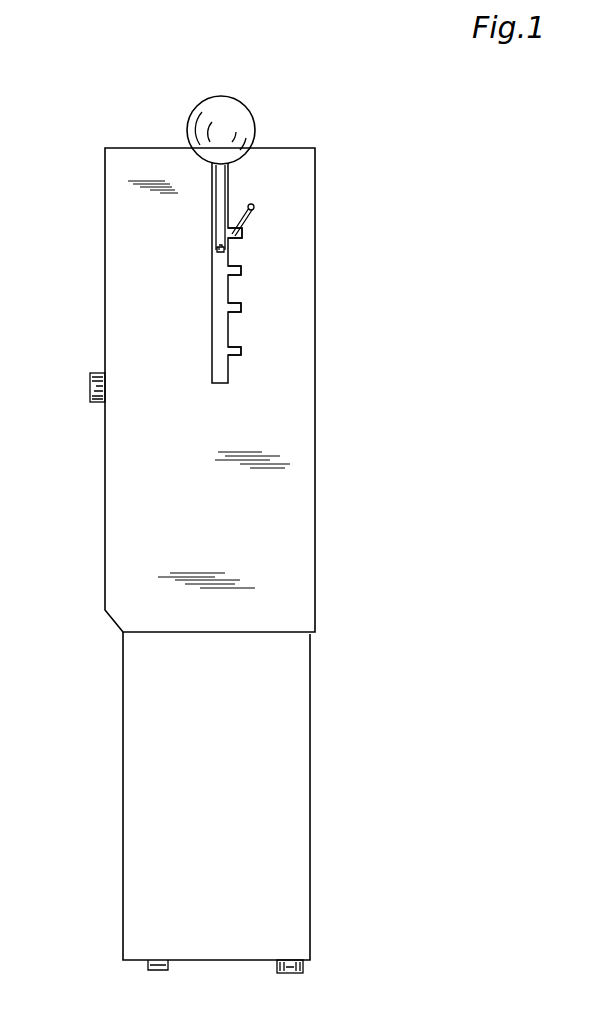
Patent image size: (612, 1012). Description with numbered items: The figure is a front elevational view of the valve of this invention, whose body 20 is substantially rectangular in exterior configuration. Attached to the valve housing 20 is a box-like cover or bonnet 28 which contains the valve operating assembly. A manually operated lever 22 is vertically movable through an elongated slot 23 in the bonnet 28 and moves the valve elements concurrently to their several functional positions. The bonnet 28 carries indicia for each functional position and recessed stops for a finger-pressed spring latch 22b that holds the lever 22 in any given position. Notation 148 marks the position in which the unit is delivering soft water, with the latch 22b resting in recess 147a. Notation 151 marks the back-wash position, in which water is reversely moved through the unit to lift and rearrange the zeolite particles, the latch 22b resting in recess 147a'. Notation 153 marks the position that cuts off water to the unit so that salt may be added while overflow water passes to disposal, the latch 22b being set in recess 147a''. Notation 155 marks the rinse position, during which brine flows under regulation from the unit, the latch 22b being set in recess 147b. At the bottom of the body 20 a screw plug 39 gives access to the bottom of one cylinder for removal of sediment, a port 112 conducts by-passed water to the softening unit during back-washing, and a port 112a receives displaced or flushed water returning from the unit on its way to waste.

The valve body 20 is at (324, 689).
The bonnet 28 is at (122, 468).
The manually operated lever 22 is at (218, 195).
The spring latch 22b is at (243, 208).
The elongated slot 23 is at (218, 287).
The recess 147a is at (298, 202).
The recess 147a' is at (199, 268).
The recess 147a'' is at (197, 310).
The recess 147b is at (236, 352).
The soft water indicia 148 is at (302, 233).
The back-wash indicia 151 is at (306, 267).
The add salt indicia 153 is at (300, 305).
The rinse indicia 155 is at (302, 350).
The port 112a is at (86, 401).
The screw plug 39 is at (166, 968).
The port 112 is at (283, 974).